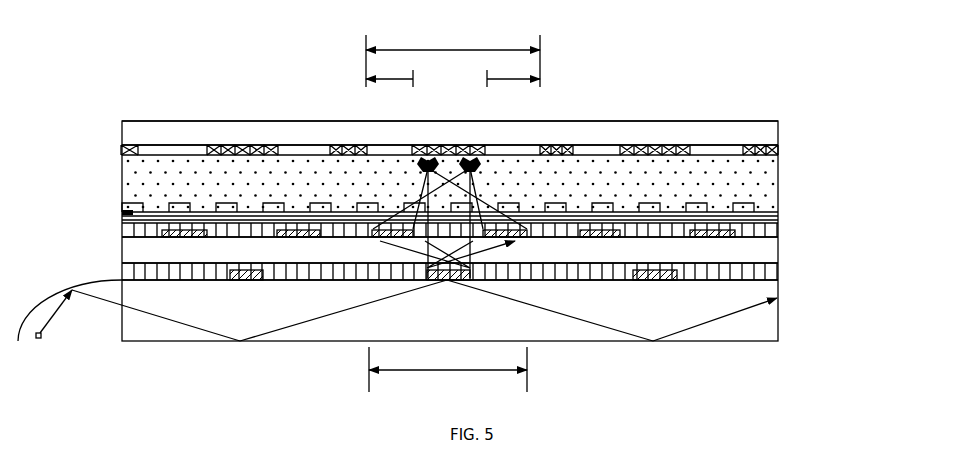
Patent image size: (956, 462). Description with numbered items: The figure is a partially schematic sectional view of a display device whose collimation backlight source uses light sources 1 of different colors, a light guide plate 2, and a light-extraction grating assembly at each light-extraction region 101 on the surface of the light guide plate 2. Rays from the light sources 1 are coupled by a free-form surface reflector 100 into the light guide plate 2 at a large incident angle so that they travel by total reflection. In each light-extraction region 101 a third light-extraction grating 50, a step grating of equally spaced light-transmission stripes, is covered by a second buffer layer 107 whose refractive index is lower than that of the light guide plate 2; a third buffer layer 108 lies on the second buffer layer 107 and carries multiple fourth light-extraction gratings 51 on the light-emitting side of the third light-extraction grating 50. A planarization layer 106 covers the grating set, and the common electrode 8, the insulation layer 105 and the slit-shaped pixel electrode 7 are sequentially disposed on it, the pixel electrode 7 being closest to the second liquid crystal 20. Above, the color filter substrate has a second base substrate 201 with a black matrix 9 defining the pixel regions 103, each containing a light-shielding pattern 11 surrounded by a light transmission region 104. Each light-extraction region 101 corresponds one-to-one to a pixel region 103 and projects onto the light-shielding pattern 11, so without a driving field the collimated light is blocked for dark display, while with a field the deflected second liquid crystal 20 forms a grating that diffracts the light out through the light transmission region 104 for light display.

The light source 1 is at (42, 340).
The light guide plate 2 is at (765, 313).
The pixel electrode 7 is at (742, 207).
The common electrode 8 is at (770, 220).
The black matrix 9 is at (349, 145).
The light-shielding pattern 11 is at (440, 148).
The second liquid crystal 20 is at (753, 167).
The third light-extraction grating 50 is at (233, 272).
The fourth light-extraction grating 51 is at (768, 233).
The free-form surface reflector 100 is at (23, 322).
The light-extraction region 101 is at (448, 369).
The pixel region 103 is at (453, 58).
The light transmission region 104 is at (453, 72).
The insulation layer 105 is at (122, 212).
The planarization layer 106 is at (775, 227).
The second buffer layer 107 is at (765, 272).
The third buffer layer 108 is at (763, 247).
The second base substrate 201 is at (753, 131).